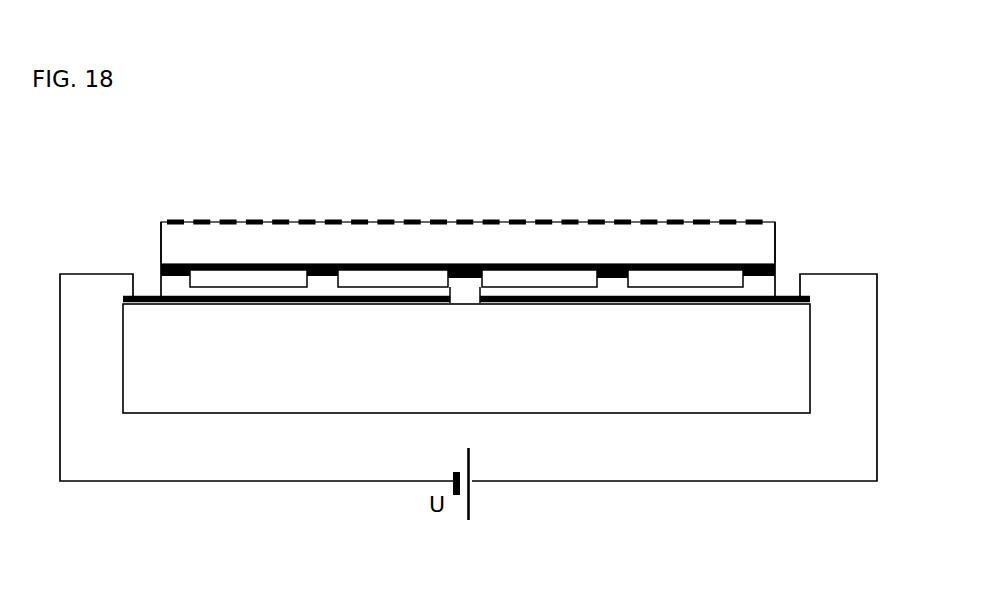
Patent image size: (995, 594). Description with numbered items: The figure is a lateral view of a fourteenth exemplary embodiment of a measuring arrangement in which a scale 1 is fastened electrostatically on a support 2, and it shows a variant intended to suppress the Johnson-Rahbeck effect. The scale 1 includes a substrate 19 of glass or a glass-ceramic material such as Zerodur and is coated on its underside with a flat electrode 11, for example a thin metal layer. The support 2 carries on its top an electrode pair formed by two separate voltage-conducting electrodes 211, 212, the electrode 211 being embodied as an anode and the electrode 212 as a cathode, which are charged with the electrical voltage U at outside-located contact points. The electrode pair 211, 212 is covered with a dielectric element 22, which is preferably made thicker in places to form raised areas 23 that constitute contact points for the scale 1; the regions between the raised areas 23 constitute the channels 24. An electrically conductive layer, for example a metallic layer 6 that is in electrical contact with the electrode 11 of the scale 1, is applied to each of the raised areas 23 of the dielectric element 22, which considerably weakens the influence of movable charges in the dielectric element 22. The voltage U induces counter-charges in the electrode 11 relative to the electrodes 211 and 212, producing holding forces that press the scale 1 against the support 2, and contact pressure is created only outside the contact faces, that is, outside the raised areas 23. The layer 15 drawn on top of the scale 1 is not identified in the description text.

The scale 1 is at (792, 200).
The support 2 is at (791, 400).
The metallic layer 6 is at (463, 278).
The electrode 11 is at (543, 265).
The cover layer 15 is at (202, 222).
The substrate 19 is at (418, 242).
The dielectric element 22 is at (313, 288).
The raised areas 23 is at (613, 280).
The channels 24 is at (686, 277).
The electrode 211 is at (148, 302).
The electrode 212 is at (790, 302).